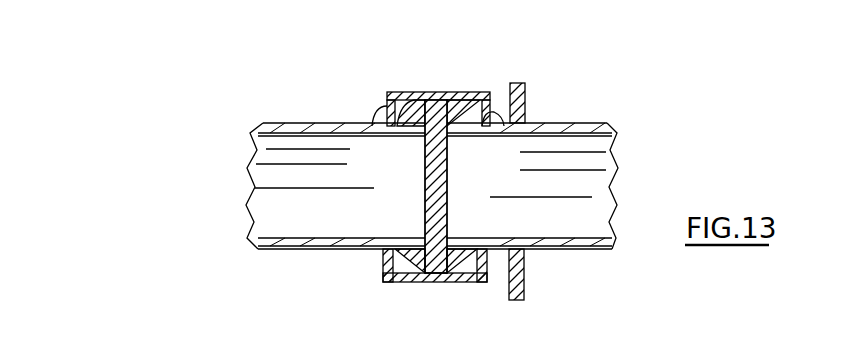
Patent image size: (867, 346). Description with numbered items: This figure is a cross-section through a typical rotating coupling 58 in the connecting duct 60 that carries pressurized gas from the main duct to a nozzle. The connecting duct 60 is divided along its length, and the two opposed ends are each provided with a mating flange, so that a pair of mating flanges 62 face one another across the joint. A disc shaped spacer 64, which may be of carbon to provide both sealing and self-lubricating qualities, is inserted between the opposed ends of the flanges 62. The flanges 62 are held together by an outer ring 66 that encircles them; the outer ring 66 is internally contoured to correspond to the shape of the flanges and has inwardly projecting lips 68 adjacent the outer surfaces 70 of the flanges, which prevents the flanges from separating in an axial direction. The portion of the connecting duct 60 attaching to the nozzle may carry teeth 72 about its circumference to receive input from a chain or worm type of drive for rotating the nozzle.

The rotating coupling 58 is at (498, 80).
The connecting duct 60 is at (337, 249).
The mating flanges 62 is at (412, 255).
The disc shaped spacer 64 is at (435, 262).
The outer ring 66 is at (425, 92).
The inwardly projecting lips 68 is at (380, 130).
The outer surfaces of the flanges 70 is at (408, 130).
The teeth 72 is at (522, 278).